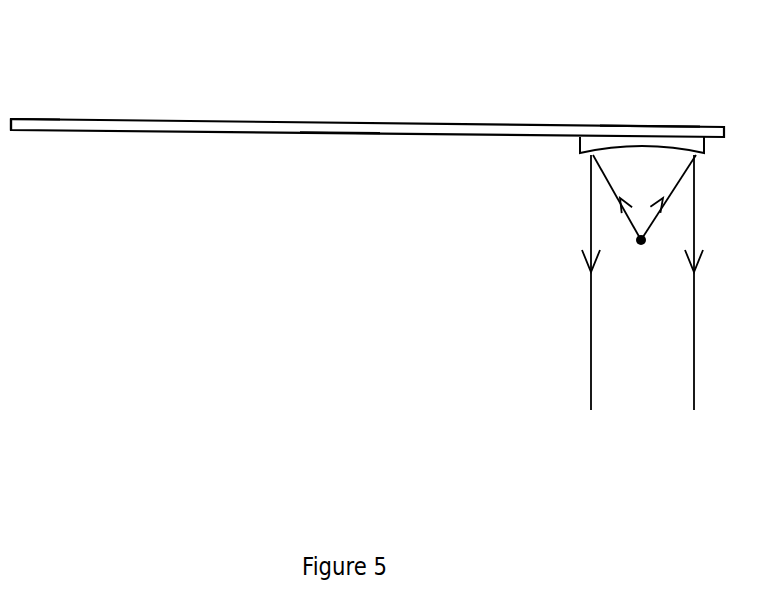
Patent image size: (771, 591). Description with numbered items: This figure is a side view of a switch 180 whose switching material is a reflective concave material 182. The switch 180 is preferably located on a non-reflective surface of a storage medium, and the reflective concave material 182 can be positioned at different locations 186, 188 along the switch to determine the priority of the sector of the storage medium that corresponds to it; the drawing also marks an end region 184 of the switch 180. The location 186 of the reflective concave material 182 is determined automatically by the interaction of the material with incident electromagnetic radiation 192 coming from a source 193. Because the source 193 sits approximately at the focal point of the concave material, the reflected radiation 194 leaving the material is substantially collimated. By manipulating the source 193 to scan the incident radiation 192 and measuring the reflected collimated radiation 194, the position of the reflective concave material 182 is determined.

The switch 180 is at (367, 122).
The reflective concave material 182 is at (595, 145).
The input end of waveguide 184 is at (40, 123).
The location of the reflective concave material 186 is at (647, 132).
The location of the reflective concave material 188 is at (340, 128).
The incident electromagnetic radiation 192 is at (644, 197).
The source 193 is at (639, 247).
The reflected radiation 194 is at (657, 282).